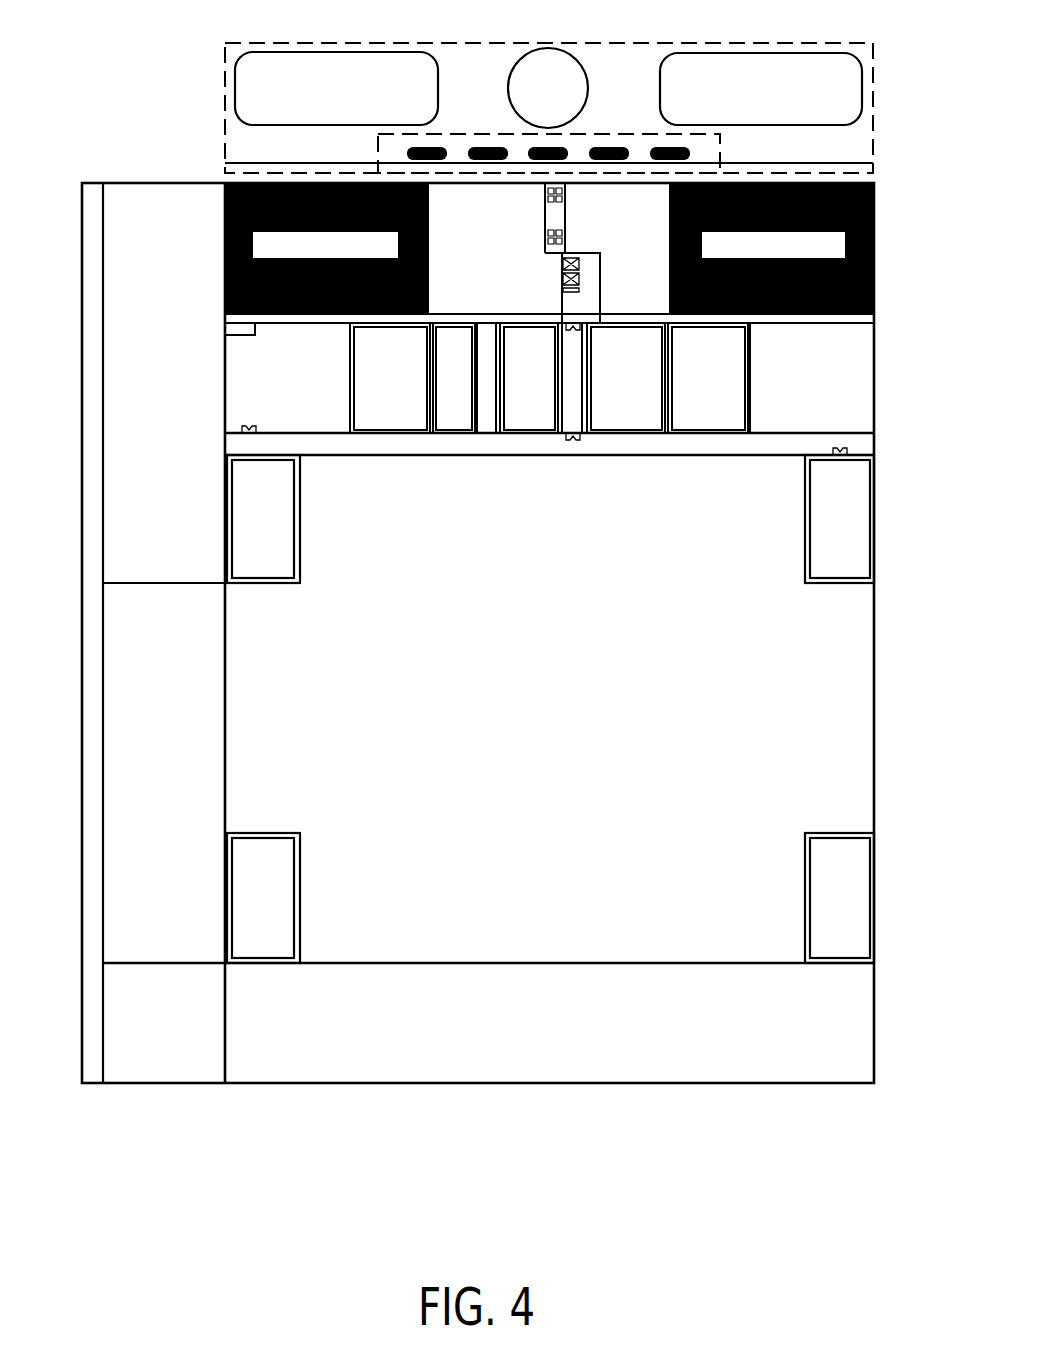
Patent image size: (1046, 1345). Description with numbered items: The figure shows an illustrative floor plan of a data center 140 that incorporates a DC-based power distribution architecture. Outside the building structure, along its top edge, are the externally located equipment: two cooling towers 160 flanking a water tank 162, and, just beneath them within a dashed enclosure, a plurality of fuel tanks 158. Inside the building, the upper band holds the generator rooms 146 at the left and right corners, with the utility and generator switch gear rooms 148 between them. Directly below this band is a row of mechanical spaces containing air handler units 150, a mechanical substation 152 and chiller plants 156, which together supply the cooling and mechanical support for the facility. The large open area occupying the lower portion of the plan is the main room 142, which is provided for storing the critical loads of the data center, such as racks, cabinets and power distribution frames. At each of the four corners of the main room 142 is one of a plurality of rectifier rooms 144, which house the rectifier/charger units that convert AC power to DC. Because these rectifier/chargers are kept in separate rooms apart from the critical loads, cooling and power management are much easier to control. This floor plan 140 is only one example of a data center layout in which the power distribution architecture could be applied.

The data center 140 is at (662, 1112).
The main room 142 is at (542, 707).
The rectifier rooms 144 is at (288, 565).
The generator rooms 146 is at (225, 223).
The utility and generator switch gear rooms 148 is at (497, 238).
The air handler units 150 is at (375, 418).
The mechanical substation 152 is at (440, 418).
The chiller plants 156 is at (540, 420).
The fuel tanks 158 is at (733, 150).
The cooling towers 160 is at (345, 60).
The water tank 162 is at (548, 60).